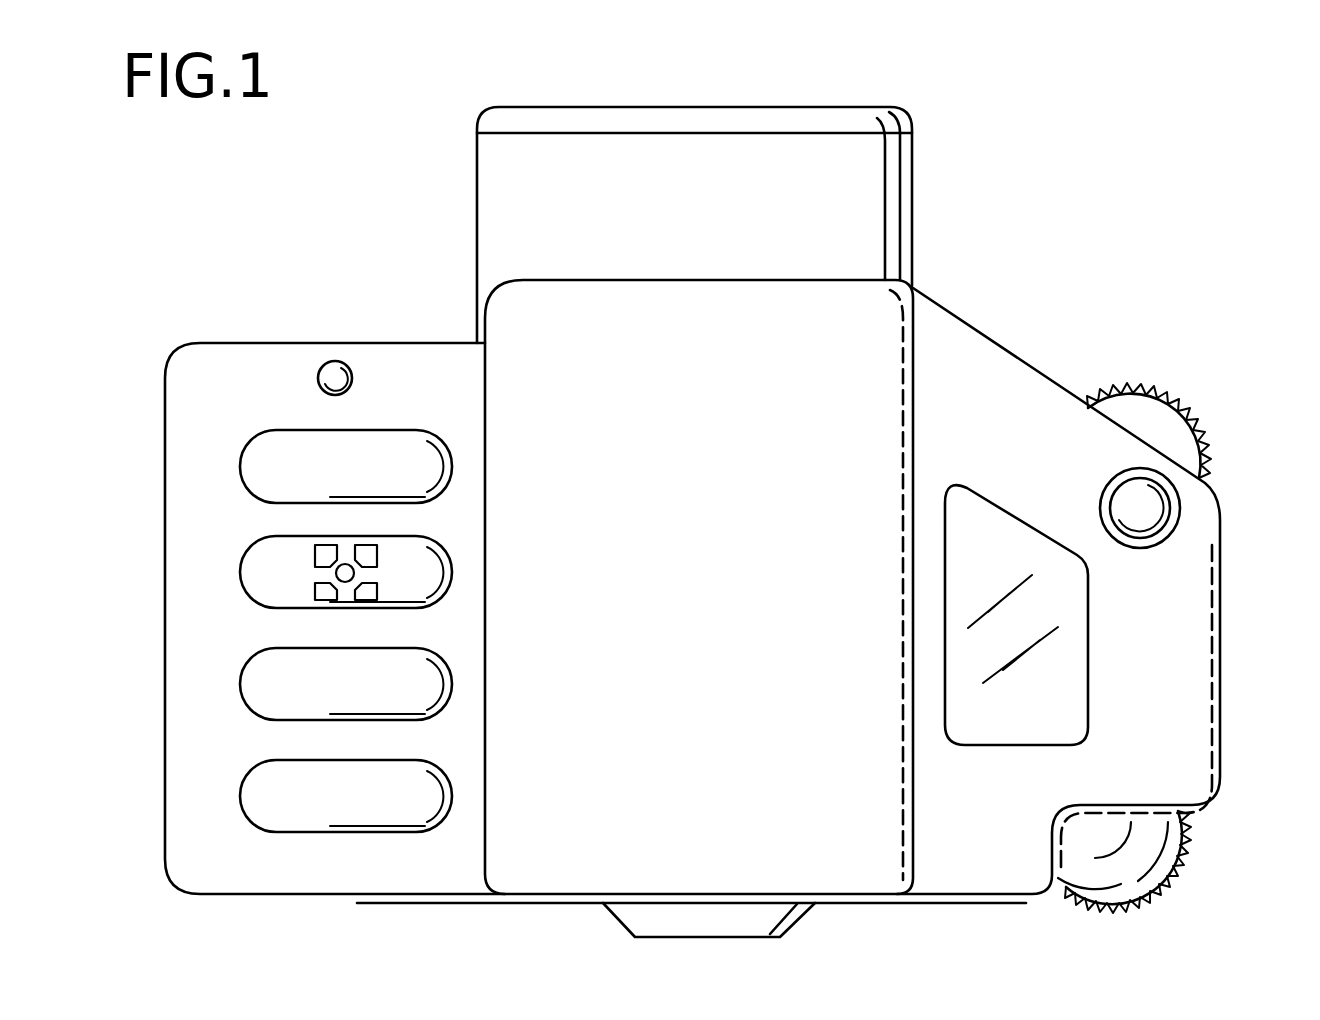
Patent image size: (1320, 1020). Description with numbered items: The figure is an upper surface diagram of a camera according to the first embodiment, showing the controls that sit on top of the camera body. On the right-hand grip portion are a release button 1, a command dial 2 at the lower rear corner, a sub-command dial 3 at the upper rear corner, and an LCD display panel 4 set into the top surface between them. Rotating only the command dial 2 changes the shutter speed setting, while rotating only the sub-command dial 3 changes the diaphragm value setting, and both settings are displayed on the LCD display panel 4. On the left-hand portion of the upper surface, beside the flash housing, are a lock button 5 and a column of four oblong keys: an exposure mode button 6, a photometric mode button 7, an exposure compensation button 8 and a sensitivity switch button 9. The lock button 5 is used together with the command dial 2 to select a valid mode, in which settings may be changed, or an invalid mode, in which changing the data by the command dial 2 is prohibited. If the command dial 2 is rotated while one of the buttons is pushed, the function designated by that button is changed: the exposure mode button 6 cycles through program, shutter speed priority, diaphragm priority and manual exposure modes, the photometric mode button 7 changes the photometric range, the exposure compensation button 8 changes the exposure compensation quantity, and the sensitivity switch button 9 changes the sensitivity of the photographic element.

The release button 1 is at (1140, 515).
The command dial 2 is at (1200, 843).
The sub-command dial 3 is at (1190, 399).
The LCD display panel 4 is at (990, 535).
The lock button 5 is at (335, 361).
The exposure mode button 6 is at (240, 467).
The photometric mode button 7 is at (240, 572).
The exposure compensation button 8 is at (240, 680).
The sensitivity switch button 9 is at (240, 790).